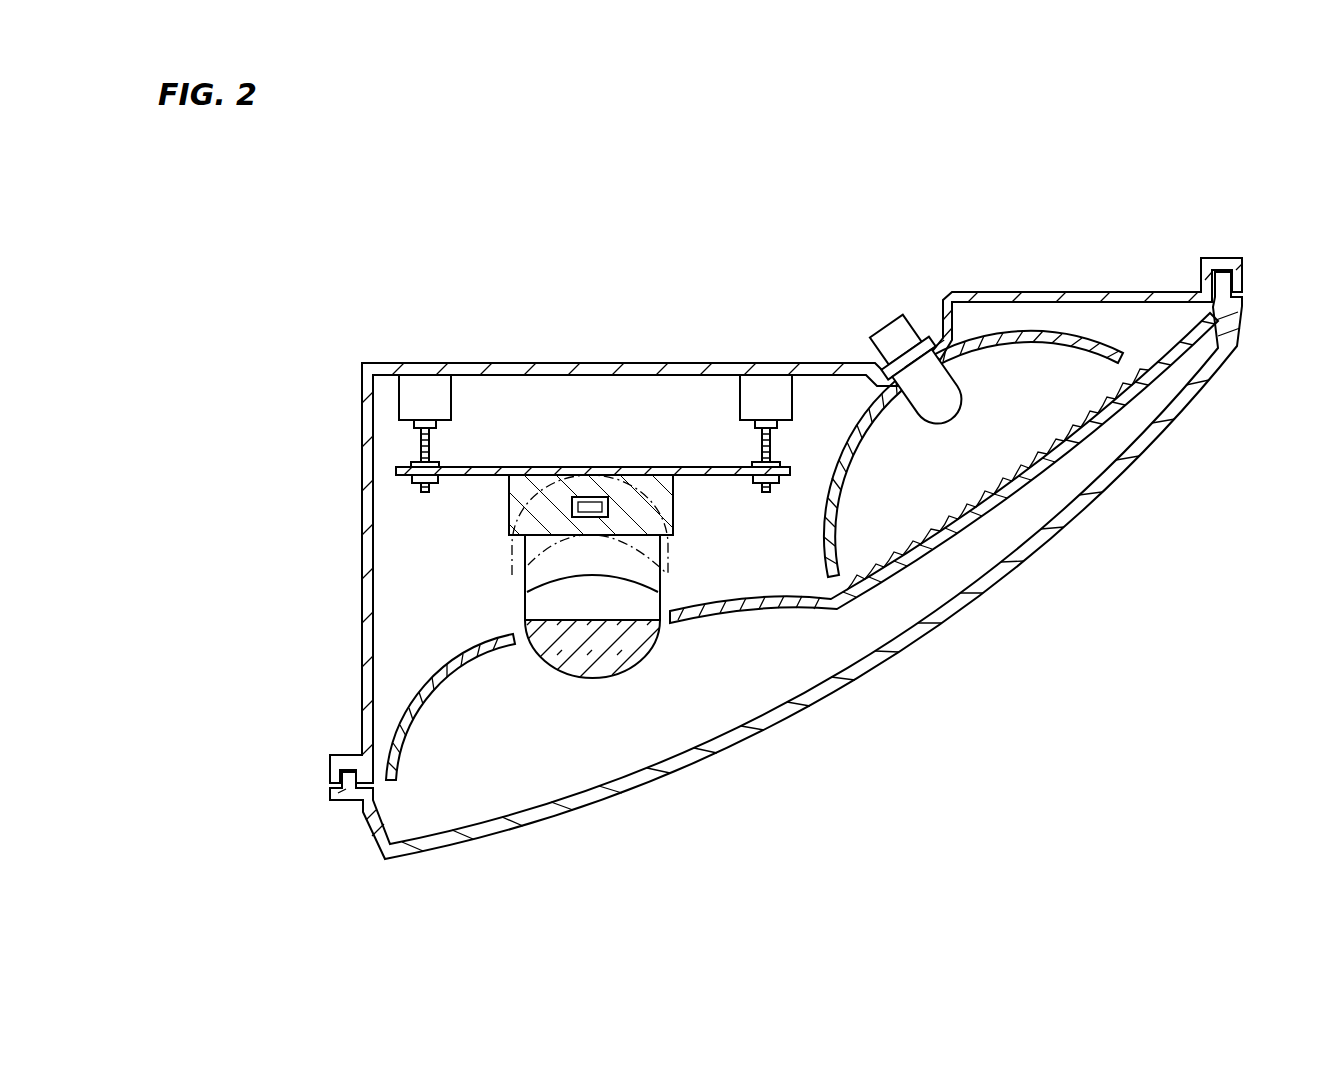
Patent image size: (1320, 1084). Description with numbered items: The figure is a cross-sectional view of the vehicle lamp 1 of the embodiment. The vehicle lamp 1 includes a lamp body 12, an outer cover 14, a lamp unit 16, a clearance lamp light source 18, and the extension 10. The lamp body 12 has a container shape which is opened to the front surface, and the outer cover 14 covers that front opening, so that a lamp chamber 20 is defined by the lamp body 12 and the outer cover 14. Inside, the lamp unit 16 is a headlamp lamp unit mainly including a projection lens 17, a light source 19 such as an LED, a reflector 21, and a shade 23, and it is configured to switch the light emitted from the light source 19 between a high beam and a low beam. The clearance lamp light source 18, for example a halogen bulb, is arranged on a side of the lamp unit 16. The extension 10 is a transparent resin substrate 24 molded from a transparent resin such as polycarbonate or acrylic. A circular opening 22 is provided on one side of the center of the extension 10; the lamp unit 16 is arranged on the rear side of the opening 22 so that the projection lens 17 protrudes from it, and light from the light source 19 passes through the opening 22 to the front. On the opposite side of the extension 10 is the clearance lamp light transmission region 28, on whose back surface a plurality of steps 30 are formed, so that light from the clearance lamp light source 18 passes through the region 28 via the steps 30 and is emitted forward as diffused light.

The vehicle lamp 1 is at (1135, 220).
The extension 10 is at (820, 606).
The lamp body 12 is at (362, 698).
The outer cover 14 is at (458, 832).
The lamp unit 16 is at (475, 622).
The projection lens 17 is at (588, 682).
The clearance lamp light source 18 is at (917, 418).
The light source 19 is at (612, 497).
The lamp chamber 20 is at (413, 803).
The reflector 21 is at (678, 557).
The circular opening 22 is at (668, 625).
The shade 23 is at (527, 596).
The transparent resin substrate 24 is at (943, 560).
The clearance lamp light transmission region 28 is at (1100, 420).
The steps 30 is at (1037, 440).